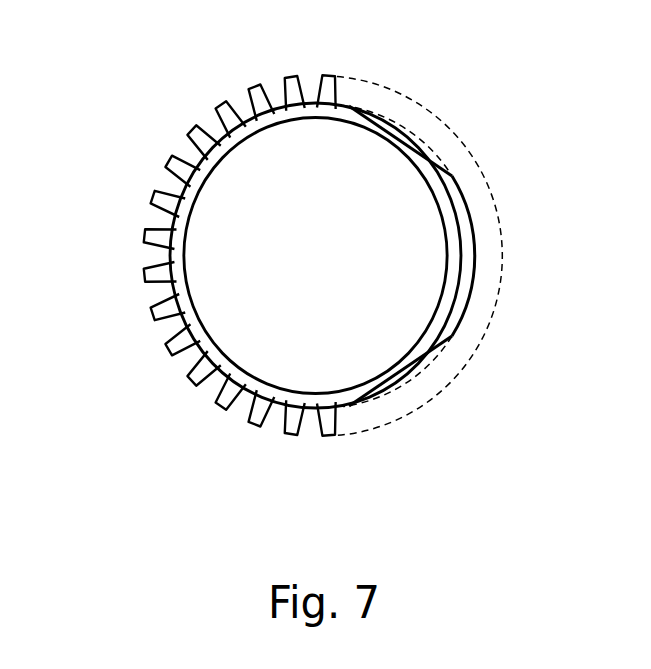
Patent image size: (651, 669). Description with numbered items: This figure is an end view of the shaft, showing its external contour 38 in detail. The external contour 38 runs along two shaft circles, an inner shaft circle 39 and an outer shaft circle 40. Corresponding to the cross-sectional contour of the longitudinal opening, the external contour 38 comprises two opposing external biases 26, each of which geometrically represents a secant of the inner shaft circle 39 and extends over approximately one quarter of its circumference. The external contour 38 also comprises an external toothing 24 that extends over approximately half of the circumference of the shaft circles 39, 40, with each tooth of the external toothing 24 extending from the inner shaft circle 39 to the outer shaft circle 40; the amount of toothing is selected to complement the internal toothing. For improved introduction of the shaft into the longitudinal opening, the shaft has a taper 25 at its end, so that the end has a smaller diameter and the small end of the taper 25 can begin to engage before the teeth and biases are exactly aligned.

The external contour 38 is at (108, 72).
The external toothing 24 is at (165, 325).
The taper 25 is at (467, 249).
The external bias 26 is at (432, 158).
The inner shaft circle 39 is at (417, 378).
The outer shaft circle 40 is at (497, 307).